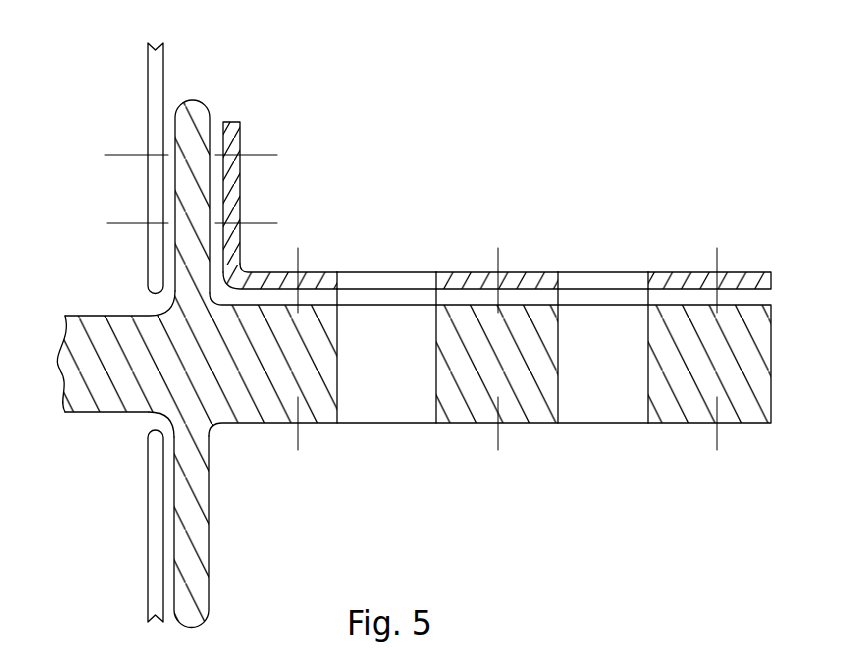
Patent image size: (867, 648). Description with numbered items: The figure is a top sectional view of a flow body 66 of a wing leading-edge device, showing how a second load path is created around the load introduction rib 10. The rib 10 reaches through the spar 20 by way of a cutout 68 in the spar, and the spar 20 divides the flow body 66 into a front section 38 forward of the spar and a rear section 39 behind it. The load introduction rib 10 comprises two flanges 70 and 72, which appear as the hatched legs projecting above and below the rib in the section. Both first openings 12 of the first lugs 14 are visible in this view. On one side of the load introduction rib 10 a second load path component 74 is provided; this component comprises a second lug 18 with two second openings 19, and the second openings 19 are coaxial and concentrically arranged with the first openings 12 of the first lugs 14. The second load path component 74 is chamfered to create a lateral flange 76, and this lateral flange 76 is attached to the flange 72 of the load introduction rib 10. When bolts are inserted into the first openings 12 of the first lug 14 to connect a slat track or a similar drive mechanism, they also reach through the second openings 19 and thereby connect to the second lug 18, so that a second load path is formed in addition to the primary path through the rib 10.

The load introduction rib 10 is at (103, 328).
The first openings 12 is at (402, 397).
The first lugs 14 is at (690, 410).
The second lug 18 is at (680, 277).
The second openings 19 is at (387, 280).
The spar 20 is at (157, 72).
The front section 38 is at (112, 84).
The rear section 39 is at (593, 120).
The flow body 66 is at (266, 108).
The cutout 68 is at (144, 427).
The flange 70 is at (197, 495).
The flange 72 is at (186, 162).
The second load path component 74 is at (268, 276).
The lateral flange 76 is at (236, 187).